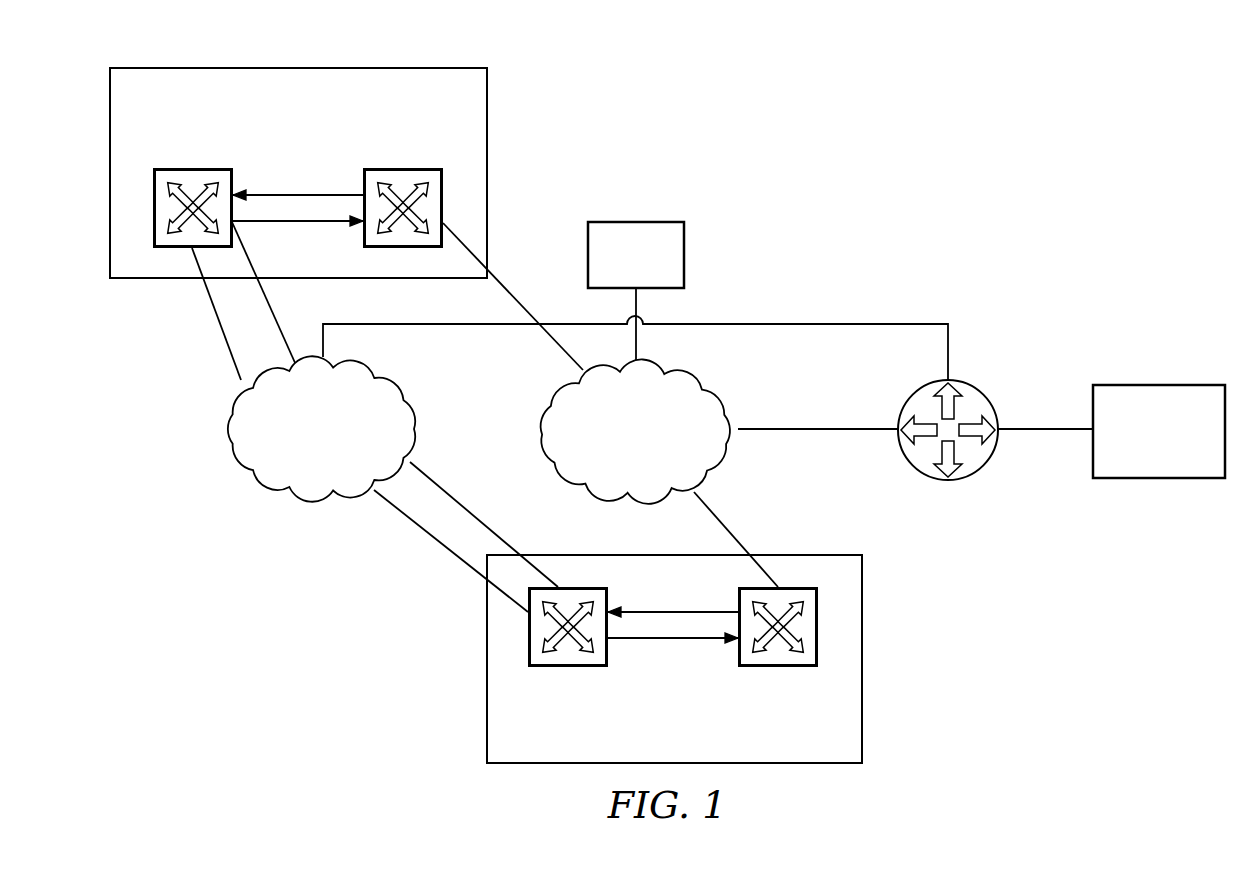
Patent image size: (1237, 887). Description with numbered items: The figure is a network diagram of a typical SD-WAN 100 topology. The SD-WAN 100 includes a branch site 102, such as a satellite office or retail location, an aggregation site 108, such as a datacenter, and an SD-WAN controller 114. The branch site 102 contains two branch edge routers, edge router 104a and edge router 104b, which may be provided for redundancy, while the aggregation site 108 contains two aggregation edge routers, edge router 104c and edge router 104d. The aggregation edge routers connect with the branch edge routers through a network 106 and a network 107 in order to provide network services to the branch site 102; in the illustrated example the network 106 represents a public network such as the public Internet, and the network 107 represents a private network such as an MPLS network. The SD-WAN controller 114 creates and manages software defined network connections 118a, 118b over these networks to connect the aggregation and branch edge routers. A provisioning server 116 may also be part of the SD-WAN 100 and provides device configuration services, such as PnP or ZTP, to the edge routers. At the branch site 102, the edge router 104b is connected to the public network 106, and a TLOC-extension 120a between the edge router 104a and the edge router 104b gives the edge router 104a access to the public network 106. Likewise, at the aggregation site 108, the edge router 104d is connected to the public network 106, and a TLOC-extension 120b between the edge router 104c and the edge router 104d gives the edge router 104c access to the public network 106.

The SD-WAN 100 is at (975, 120).
The branch site 102 is at (862, 592).
The edge router 104a is at (568, 667).
The edge router 104b is at (775, 667).
The edge router 104c is at (197, 168).
The edge router 104d is at (402, 168).
The network 106 is at (635, 431).
The network 107 is at (321, 429).
The aggregation site 108 is at (487, 100).
The SD-WAN controller 114 is at (1159, 431).
The provisioning server 116 is at (636, 255).
The software defined network connection 118a is at (725, 527).
The software defined network connection 118b is at (513, 290).
The TLOC-extension 120a is at (677, 658).
The TLOC-extension 120b is at (298, 184).